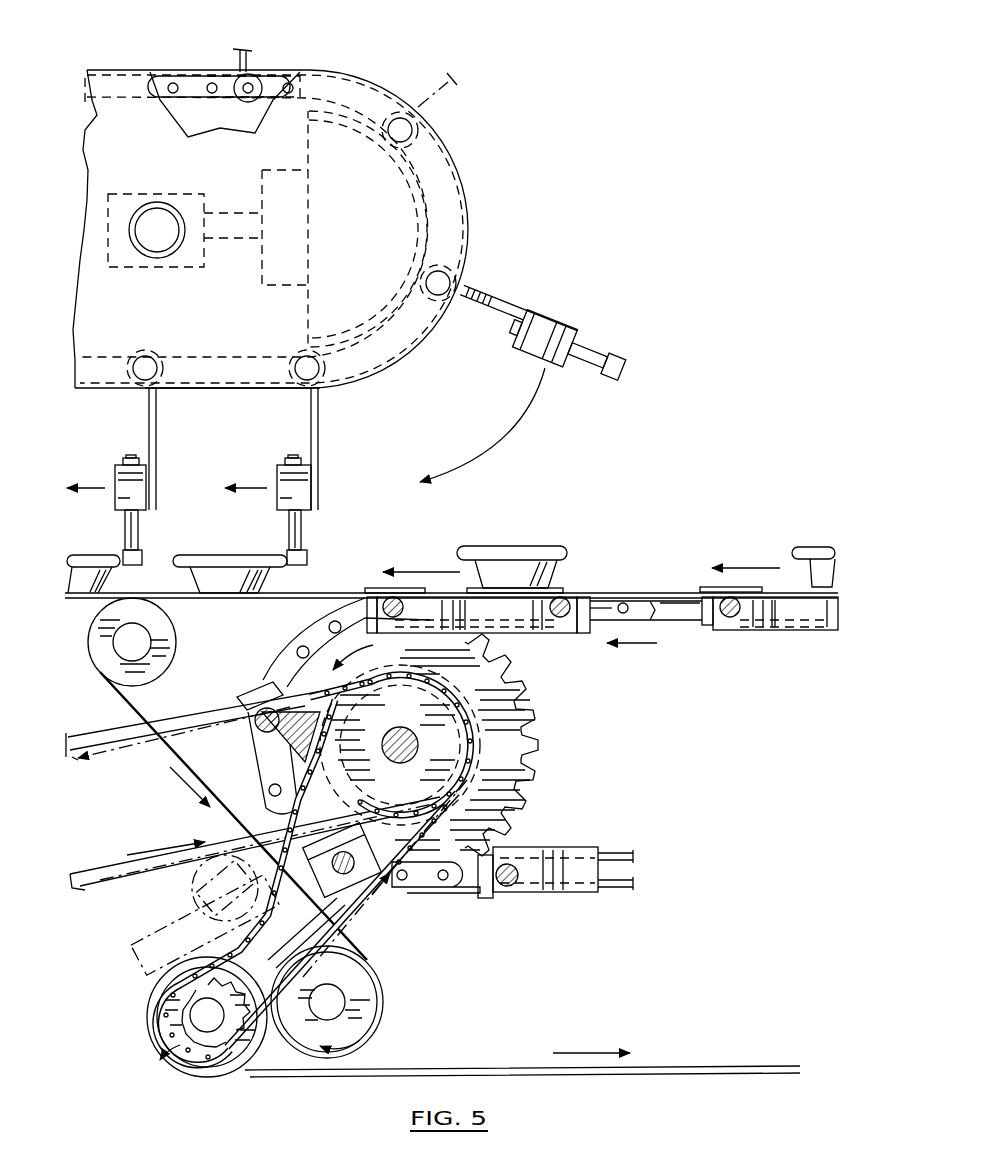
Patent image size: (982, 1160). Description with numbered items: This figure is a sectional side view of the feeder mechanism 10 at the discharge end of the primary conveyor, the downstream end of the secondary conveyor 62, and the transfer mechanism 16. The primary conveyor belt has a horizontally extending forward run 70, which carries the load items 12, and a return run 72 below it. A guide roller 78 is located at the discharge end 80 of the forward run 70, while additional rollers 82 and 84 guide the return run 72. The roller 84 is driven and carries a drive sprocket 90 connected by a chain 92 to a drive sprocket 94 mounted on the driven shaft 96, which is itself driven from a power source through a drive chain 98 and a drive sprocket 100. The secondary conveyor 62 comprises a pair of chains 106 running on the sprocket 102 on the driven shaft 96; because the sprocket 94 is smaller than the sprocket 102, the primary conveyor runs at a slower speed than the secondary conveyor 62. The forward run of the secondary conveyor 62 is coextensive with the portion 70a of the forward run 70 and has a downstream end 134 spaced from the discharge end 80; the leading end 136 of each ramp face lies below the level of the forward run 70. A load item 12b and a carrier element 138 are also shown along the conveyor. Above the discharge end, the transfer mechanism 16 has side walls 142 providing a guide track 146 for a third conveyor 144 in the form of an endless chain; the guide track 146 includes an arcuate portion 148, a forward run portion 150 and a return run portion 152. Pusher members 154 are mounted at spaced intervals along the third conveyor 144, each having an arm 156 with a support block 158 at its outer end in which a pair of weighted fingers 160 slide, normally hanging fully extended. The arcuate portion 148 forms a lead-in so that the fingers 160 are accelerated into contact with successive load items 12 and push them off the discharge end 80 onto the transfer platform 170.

The feeder mechanism 10 is at (652, 512).
The load item 12 is at (85, 553).
The container 12b is at (798, 585).
The transfer mechanism 16 is at (339, 70).
The secondary conveyor 62 is at (645, 612).
The forward run 70 is at (636, 596).
The portion of the forward run 70a is at (675, 594).
The return run 72 is at (468, 1068).
The guide roller 78 is at (167, 657).
The discharge end 80 is at (190, 603).
The roller 82 is at (360, 970).
The driven roller 84 is at (157, 1028).
The drive sprocket 90 is at (210, 1038).
The chain 92 is at (340, 915).
The drive sprocket 94 is at (290, 743).
The driven shaft 96 is at (417, 738).
The drive chain 98 is at (130, 725).
The drive sprocket 100 is at (423, 713).
The sprocket 102 is at (507, 767).
The chains 106 is at (608, 608).
The downstream end 134 is at (345, 608).
The leading end 136 is at (795, 620).
The carrier block 138 is at (560, 587).
The side walls 142 is at (148, 113).
The third conveyor 144 is at (193, 82).
The guide track 146 is at (103, 72).
The arcuate portion 148 is at (447, 197).
The forward run portion 150 is at (228, 372).
The return run portion 152 is at (121, 137).
The pusher members 154 is at (148, 427).
The arm 156 is at (318, 427).
The support block 158 is at (283, 490).
The fingers 160 is at (300, 527).
The transfer platform 170 is at (110, 593).